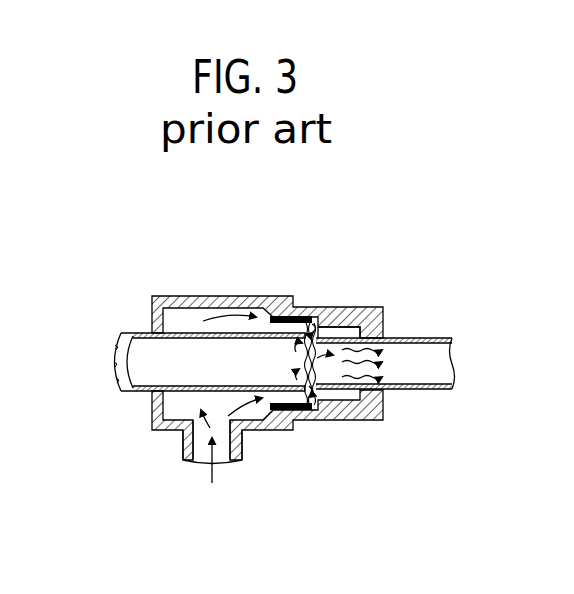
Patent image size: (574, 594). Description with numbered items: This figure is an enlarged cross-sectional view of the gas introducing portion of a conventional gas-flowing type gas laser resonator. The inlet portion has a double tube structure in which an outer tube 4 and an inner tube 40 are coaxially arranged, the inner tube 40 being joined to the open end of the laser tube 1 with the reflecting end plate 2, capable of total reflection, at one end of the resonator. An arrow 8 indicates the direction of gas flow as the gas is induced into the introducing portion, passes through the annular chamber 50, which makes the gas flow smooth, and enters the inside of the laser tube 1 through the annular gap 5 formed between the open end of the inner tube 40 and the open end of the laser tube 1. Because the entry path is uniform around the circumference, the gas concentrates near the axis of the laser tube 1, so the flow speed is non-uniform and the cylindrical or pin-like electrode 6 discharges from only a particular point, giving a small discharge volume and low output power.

The laser tube 1 is at (433, 338).
The reflecting end plate 2 is at (113, 345).
The outer tube 4 is at (178, 296).
The gap 5 is at (322, 410).
The electrode 6 is at (287, 317).
The arrow 8 is at (212, 483).
The inner tube 40 is at (188, 393).
The annular chamber 50 is at (348, 327).